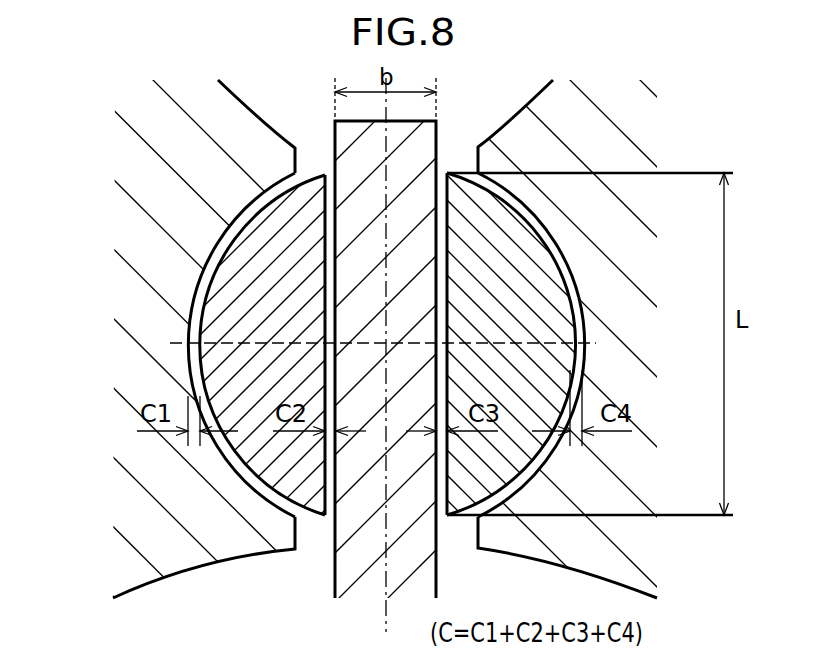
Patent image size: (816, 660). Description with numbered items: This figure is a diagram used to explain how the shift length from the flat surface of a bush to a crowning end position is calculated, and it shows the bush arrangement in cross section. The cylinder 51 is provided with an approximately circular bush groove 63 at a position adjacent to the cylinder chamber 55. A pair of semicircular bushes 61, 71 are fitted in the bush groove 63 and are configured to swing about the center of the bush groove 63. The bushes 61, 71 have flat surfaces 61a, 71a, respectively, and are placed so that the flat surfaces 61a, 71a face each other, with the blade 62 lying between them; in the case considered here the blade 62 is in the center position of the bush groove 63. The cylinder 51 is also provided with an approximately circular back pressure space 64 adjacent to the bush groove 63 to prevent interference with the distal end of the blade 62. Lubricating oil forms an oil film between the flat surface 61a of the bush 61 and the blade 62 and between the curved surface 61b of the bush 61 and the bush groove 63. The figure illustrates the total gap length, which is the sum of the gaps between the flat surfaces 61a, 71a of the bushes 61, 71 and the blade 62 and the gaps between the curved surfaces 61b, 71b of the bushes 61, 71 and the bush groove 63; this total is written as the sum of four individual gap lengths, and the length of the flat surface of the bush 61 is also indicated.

The cylinder 51 is at (230, 226).
The cylinder chamber 55 is at (582, 588).
The bush 61 is at (408, 330).
The flat surface 61a is at (450, 246).
The curved surface 61b is at (570, 300).
The blade 62 is at (430, 132).
The bush groove 63 is at (190, 312).
The back pressure space 64 is at (522, 115).
The bush 71 is at (408, 330).
The flat surface 71a is at (325, 246).
The curved surface 71b is at (275, 213).